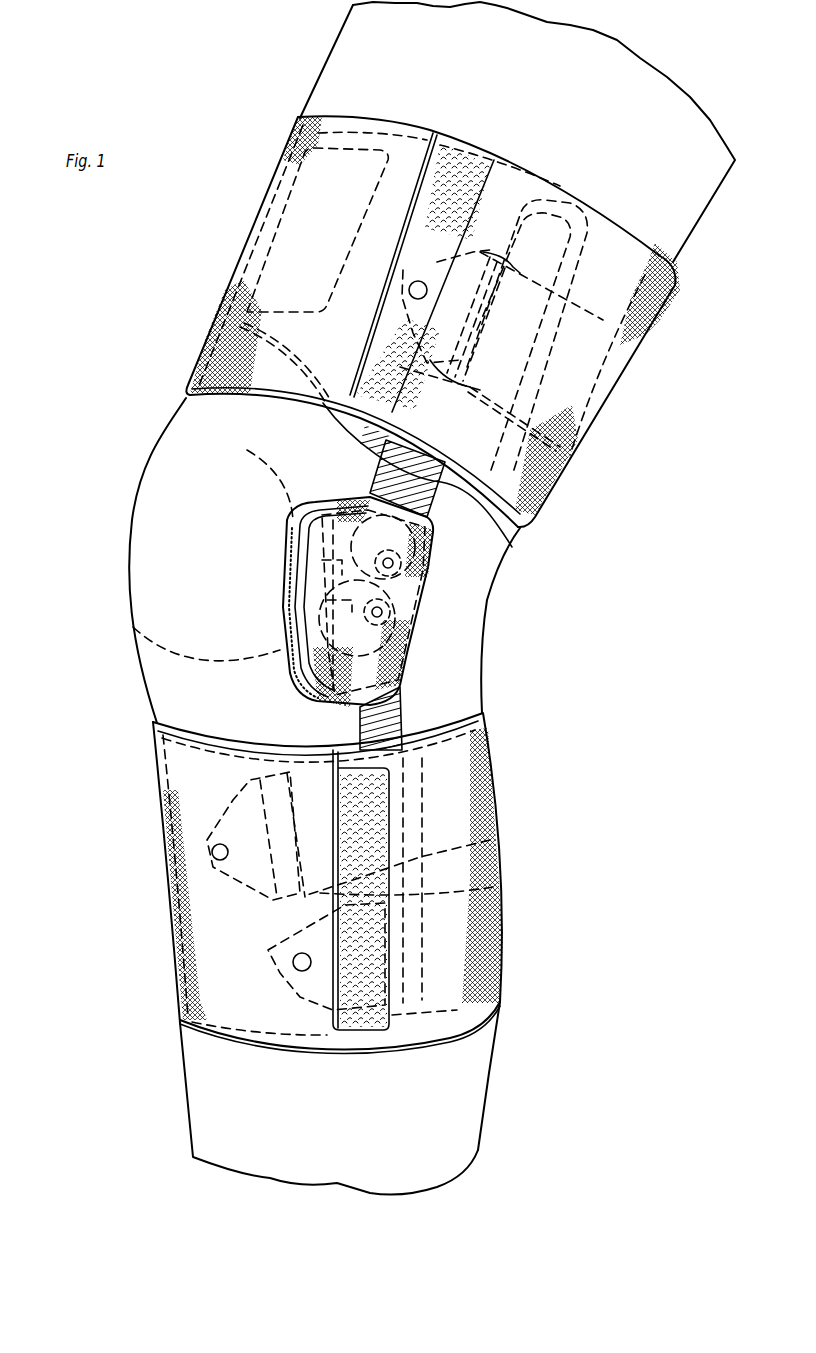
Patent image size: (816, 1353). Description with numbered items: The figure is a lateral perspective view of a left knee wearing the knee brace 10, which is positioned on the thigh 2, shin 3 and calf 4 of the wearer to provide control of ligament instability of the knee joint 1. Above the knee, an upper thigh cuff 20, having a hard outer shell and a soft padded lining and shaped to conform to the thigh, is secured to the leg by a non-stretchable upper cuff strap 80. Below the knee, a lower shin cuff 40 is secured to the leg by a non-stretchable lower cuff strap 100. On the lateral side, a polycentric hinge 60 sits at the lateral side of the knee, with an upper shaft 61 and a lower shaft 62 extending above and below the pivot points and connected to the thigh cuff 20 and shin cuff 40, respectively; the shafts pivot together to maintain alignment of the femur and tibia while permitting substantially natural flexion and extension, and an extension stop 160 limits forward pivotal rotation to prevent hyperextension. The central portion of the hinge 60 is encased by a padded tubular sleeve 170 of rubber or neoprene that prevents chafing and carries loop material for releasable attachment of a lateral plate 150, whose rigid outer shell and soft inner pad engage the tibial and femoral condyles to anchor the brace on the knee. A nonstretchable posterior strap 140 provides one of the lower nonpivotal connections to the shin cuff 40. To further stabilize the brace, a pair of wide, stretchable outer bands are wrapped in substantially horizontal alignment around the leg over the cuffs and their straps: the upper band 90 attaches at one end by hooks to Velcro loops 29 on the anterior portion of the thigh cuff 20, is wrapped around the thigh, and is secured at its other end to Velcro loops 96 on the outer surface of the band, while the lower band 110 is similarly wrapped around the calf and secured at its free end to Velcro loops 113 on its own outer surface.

The knee joint 1 is at (137, 498).
The thigh 2 is at (313, 92).
The shin 3 is at (183, 1050).
The calf 4 is at (478, 1093).
The knee brace 10 is at (577, 594).
The upper thigh cuff 20 is at (343, 440).
The Velcro loops 29 is at (262, 220).
The Velcro loops 96 is at (473, 167).
The upper cuff strap 80 is at (612, 320).
The upper outer band 90 is at (669, 293).
The upper shaft 61 is at (512, 542).
The lateral plate 150 is at (300, 668).
The polycentric hinge 60 is at (418, 577).
The extension stop 160 is at (410, 596).
The padded tubular sleeve 170 is at (380, 637).
The lower shaft 62 is at (387, 723).
The lower shin cuff 40 is at (160, 777).
The posterior strap 140 is at (497, 840).
The lower cuff strap 100 is at (500, 886).
The lower outer band 110 is at (467, 1032).
The Velcro loops 113 is at (340, 1030).